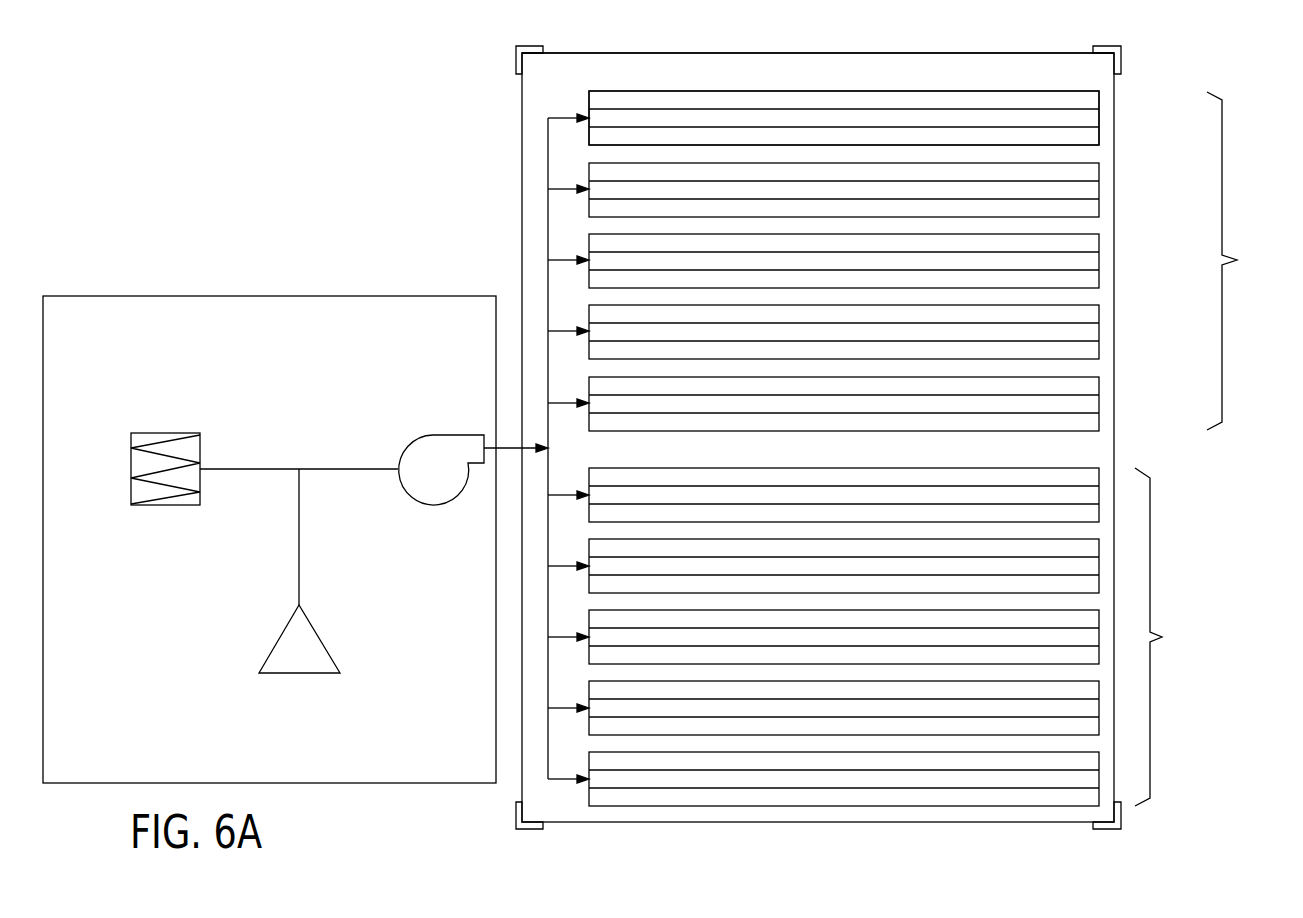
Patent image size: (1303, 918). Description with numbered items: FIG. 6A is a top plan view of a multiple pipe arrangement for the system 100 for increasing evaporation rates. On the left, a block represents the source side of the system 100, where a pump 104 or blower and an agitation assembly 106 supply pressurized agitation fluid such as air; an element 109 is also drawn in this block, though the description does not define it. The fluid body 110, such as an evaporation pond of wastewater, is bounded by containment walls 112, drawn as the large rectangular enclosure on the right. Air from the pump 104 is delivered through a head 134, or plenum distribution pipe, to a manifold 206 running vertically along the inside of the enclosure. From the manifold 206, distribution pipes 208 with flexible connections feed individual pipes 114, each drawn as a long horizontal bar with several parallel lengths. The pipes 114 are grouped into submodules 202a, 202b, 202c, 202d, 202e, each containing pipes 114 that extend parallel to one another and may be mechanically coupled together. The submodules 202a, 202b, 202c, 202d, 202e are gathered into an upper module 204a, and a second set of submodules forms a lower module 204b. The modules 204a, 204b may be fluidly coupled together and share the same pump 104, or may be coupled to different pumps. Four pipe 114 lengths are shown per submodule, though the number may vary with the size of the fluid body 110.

The system 100 is at (288, 220).
The pump 104 is at (433, 506).
The agitation assembly 106 is at (299, 674).
The heat exchanger 109 is at (163, 506).
The fluid body 110 is at (1090, 75).
The containment wall 112 is at (835, 52).
The pipe 114 is at (757, 90).
The head 134 is at (508, 443).
The submodule 202a is at (1099, 114).
The submodule 202b is at (1099, 185).
The submodule 202c is at (1099, 256).
The submodule 202d is at (1099, 327).
The submodule 202e is at (1099, 399).
The module 204a is at (1252, 261).
The module 204b is at (905, 637).
The manifold 206 is at (546, 140).
The distribution pipe 208 is at (562, 116).